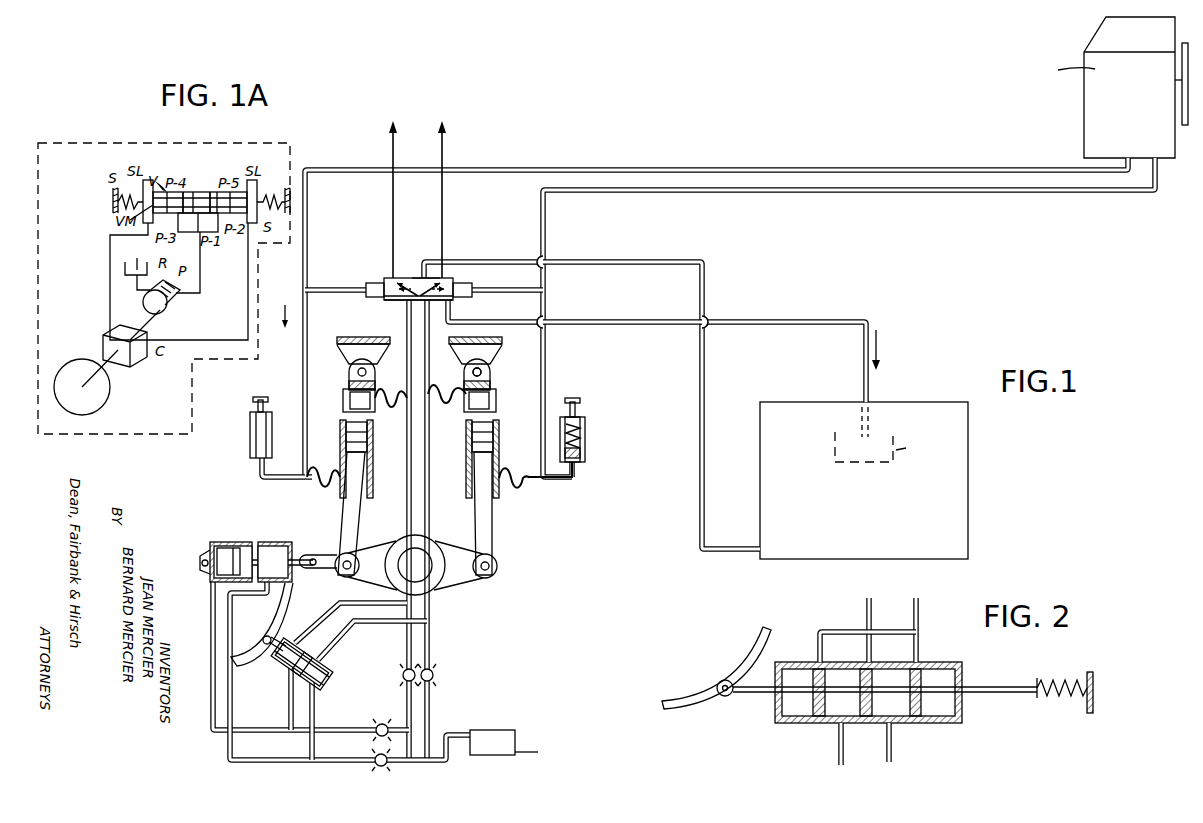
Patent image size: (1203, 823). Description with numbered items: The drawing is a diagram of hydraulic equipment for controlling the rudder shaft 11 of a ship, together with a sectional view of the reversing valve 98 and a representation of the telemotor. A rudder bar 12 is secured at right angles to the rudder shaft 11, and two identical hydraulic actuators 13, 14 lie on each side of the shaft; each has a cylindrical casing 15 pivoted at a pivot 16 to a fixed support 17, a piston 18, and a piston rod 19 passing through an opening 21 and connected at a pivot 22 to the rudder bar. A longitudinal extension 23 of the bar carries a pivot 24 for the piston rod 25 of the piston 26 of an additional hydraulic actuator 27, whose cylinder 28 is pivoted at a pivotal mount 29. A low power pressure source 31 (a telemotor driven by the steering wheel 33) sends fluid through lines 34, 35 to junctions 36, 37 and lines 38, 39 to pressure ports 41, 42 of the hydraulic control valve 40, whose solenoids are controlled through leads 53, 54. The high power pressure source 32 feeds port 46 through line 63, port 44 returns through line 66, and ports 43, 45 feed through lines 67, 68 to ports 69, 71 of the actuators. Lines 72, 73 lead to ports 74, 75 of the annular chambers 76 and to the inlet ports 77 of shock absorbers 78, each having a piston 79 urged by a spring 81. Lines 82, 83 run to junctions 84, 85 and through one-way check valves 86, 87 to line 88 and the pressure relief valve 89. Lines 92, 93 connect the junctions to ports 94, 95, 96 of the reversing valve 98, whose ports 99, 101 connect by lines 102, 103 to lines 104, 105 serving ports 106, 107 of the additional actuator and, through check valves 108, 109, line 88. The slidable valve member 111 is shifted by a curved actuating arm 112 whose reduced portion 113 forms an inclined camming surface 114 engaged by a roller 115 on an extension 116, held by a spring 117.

In FIG. 1, the rudder shaft 11 is at (430, 575).
In FIG. 1, the rudder bar 12 is at (392, 542).
In FIG. 1, the hydraulic actuator 13 is at (342, 437).
In FIG. 1, the hydraulic actuator 14 is at (499, 442).
In FIG. 1, the cylindrical casing 15 is at (498, 401).
In FIG. 1, the pivot 16 is at (490, 372).
In FIG. 1, the fixed support 17 is at (492, 354).
In FIG. 1, the piston 18 is at (470, 440).
In FIG. 1, the piston rod 19 is at (345, 520).
In FIG. 1, the opening 21 is at (496, 505).
In FIG. 1, the pivot 22 is at (492, 571).
In FIG. 1, the longitudinal extension 23 is at (322, 549).
In FIG. 1, the pivot 24 is at (313, 567).
In FIG. 1, the piston rod 25 is at (273, 548).
In FIG. 1, the piston 26 is at (228, 548).
In FIG. 1, the additional hydraulic actuator 27 is at (244, 548).
In FIG. 1, the cylinder 28 is at (220, 588).
In FIG. 1, the pivotal mount 29 is at (203, 558).
In FIG. 1, the low power pressure source 31 is at (1134, 117).
In FIG. 1, the high power pressure source 32 is at (968, 452).
In FIG. 1A, the steering wheel 33 is at (105, 383).
In FIG. 1, the steering wheel 33 is at (1190, 130).
In FIG. 1A, the line 34 is at (188, 187).
In FIG. 1, the line 34 is at (1021, 197).
In FIG. 1A, the line 35 is at (214, 190).
In FIG. 1, the line 35 is at (1002, 170).
In FIG. 1, the junction 36 is at (546, 291).
In FIG. 1, the junction 37 is at (302, 290).
In FIG. 1, the line 38 is at (530, 289).
In FIG. 1, the line 39 is at (352, 288).
In FIG. 1, the hydraulic control valve 40 is at (424, 277).
In FIG. 1, the pressure port 41 is at (466, 284).
In FIG. 1, the pressure port 42 is at (372, 282).
In FIG. 1, the port 43 is at (396, 301).
In FIG. 1, the port 44 is at (456, 304).
In FIG. 1, the port 45 is at (430, 318).
In FIG. 1, the port 46 is at (418, 275).
In FIG. 1, the lead 53 is at (391, 205).
In FIG. 1, the lead 54 is at (444, 205).
In FIG. 1, the line 63 is at (706, 290).
In FIG. 1, the line 66 is at (672, 321).
In FIG. 1, the line 67 is at (406, 326).
In FIG. 1, the line 68 is at (427, 372).
In FIG. 1, the port 69 is at (380, 404).
In FIG. 1, the port 71 is at (449, 410).
In FIG. 1, the line 72 is at (545, 386).
In FIG. 1, the line 73 is at (303, 366).
In FIG. 1, the port 74 is at (506, 476).
In FIG. 1, the port 75 is at (336, 476).
In FIG. 1, the annular chamber 76 is at (468, 481).
In FIG. 1, the inlet port 77 is at (576, 476).
In FIG. 1, the shock absorber 78 is at (250, 437).
In FIG. 1, the piston 79 is at (585, 457).
In FIG. 1, the spring 81 is at (580, 426).
In FIG. 1, the line 82 is at (406, 470).
In FIG. 1, the line 83 is at (424, 450).
In FIG. 1, the junction 84 is at (405, 622).
In FIG. 1, the junction 85 is at (430, 622).
In FIG. 1, the one-way check valve 86 is at (401, 678).
In FIG. 1, the one-way check valve 87 is at (435, 677).
In FIG. 1, the line 88 is at (444, 762).
In FIG. 1, the pressure relief valve 89 is at (500, 730).
In FIG. 1, the line 92 is at (356, 602).
In FIG. 2, the line 92 is at (867, 610).
In FIG. 1, the line 93 is at (367, 623).
In FIG. 2, the line 93 is at (921, 610).
In FIG. 1, the port 94 is at (322, 663).
In FIG. 2, the port 94 is at (872, 664).
In FIG. 1, the port 95 is at (293, 640).
In FIG. 2, the port 95 is at (823, 664).
In FIG. 1, the port 96 is at (328, 676).
In FIG. 2, the port 96 is at (922, 662).
In FIG. 1, the reversing valve 98 is at (325, 693).
In FIG. 2, the reversing valve 98 is at (966, 662).
In FIG. 1, the port 99 is at (289, 678).
In FIG. 2, the port 99 is at (847, 728).
In FIG. 1, the port 101 is at (300, 690).
In FIG. 2, the port 101 is at (894, 730).
In FIG. 1, the line 102 is at (290, 740).
In FIG. 2, the line 102 is at (836, 746).
In FIG. 1, the line 103 is at (315, 735).
In FIG. 2, the line 103 is at (887, 760).
In FIG. 1, the line 104 is at (267, 730).
In FIG. 1, the line 105 is at (280, 763).
In FIG. 1, the port 106 is at (211, 580).
In FIG. 1, the port 107 is at (262, 598).
In FIG. 1, the one-way check valve 108 is at (381, 726).
In FIG. 1, the one-way check valve 109 is at (376, 765).
In FIG. 2, the slidable valve member 111 is at (925, 704).
In FIG. 1, the curved actuating arm 112 is at (254, 635).
In FIG. 2, the curved actuating arm 112 is at (752, 638).
In FIG. 1, the reduced portion 113 is at (262, 649).
In FIG. 2, the reduced portion 113 is at (680, 695).
In FIG. 2, the inclined camming surface 114 is at (720, 681).
In FIG. 2, the roller 115 is at (720, 700).
In FIG. 2, the extension 116 is at (736, 700).
In FIG. 2, the spring 117 is at (1063, 700).